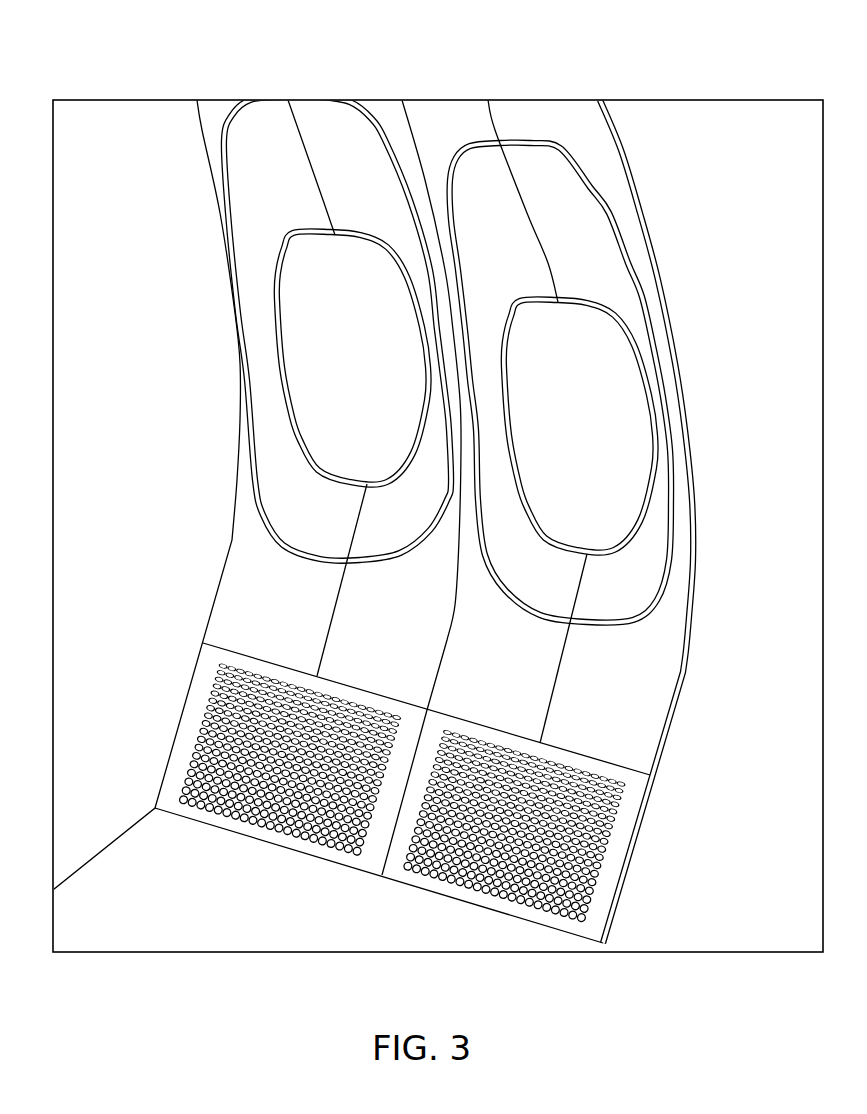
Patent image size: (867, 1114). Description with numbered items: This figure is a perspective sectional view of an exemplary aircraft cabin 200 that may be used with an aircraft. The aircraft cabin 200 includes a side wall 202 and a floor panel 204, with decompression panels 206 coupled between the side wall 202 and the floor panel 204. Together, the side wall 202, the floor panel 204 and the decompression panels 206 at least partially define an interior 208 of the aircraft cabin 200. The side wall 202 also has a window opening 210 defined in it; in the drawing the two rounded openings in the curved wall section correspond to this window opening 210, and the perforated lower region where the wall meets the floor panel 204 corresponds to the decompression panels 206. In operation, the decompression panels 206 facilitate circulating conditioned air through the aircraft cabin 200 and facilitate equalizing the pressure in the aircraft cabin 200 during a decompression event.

The aircraft cabin 200 is at (368, 58).
The side wall 202 is at (598, 155).
The floor panel 204 is at (276, 917).
The decompression panels 206 is at (623, 821).
The interior 208 is at (165, 452).
The window opening 210 is at (600, 437).